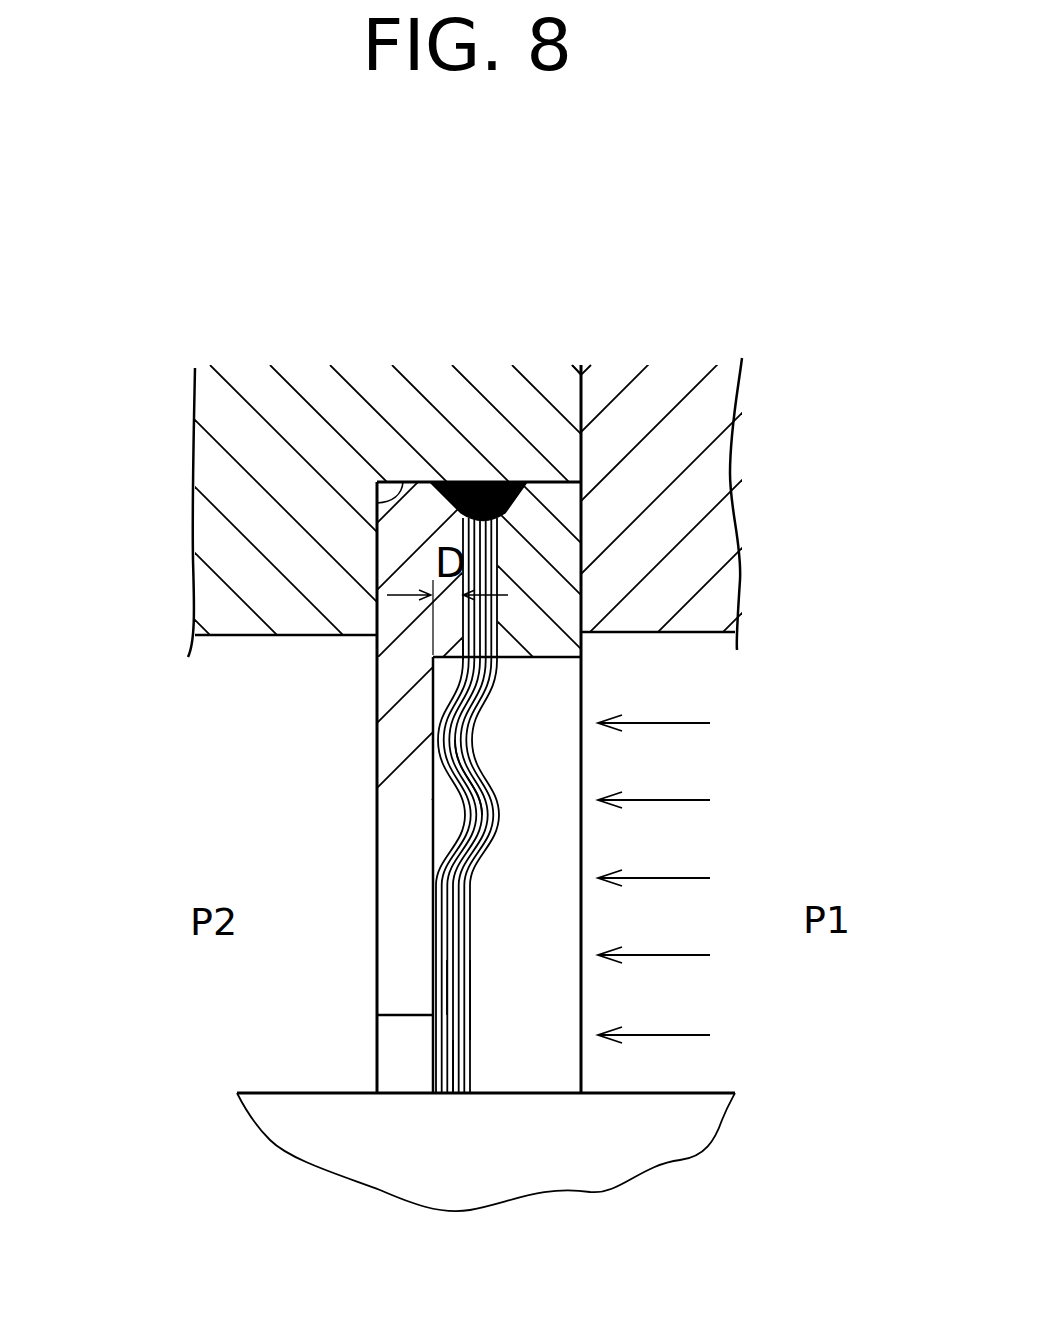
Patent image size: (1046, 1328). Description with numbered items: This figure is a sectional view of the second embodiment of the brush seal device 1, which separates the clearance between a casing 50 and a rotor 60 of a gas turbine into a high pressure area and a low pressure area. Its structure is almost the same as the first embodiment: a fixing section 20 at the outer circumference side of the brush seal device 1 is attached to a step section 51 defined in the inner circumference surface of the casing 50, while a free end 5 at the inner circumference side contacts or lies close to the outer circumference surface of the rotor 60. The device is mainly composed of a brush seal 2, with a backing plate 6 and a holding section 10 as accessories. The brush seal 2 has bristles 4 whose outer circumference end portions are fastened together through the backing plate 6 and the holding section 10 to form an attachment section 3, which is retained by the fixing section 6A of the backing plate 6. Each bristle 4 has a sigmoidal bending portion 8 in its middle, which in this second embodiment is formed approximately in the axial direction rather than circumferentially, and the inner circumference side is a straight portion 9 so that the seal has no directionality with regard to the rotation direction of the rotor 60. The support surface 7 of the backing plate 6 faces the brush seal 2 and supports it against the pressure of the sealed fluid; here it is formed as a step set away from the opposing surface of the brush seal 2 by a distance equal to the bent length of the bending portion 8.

The brush seal device 1 is at (692, 431).
The brush seal 2 is at (455, 915).
The attachment section 3 is at (470, 483).
The bristle 4 is at (470, 998).
The free end 5 is at (453, 1093).
The backing plate 6 is at (400, 813).
The fixing section 6A is at (388, 540).
The support surface 7 is at (437, 693).
The bending portion 8 is at (460, 745).
The straight portion 9 is at (447, 987).
The holding section 10 is at (572, 542).
The fixing section 20 is at (417, 483).
The casing 50 is at (231, 435).
The step section 51 is at (377, 503).
The rotor 60 is at (470, 1160).